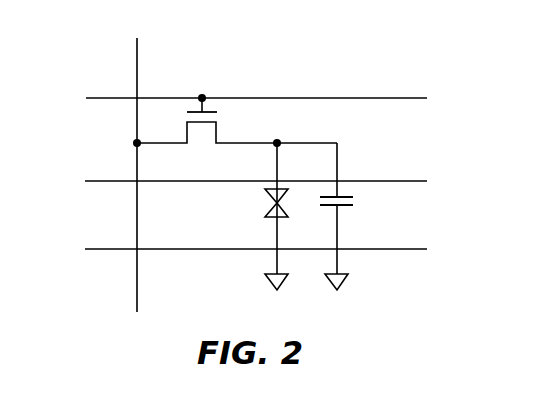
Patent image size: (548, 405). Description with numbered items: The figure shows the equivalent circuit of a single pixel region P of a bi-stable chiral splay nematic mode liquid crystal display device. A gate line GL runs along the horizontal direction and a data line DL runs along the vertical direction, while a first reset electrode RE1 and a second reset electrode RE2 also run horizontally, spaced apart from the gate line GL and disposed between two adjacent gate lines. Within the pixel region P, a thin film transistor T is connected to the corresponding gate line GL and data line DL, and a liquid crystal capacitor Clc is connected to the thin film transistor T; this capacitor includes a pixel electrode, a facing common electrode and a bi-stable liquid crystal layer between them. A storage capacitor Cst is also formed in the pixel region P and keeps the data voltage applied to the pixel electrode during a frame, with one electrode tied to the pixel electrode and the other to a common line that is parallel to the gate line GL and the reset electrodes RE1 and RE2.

The data line DL is at (150, 174).
The gate line GL is at (256, 87).
The first reset electrode RE1 is at (238, 182).
The second reset electrode RE2 is at (238, 251).
The thin film transistor T is at (235, 130).
The liquid crystal capacitor Clc is at (256, 216).
The storage capacitor Cst is at (359, 216).
The pixel region P is at (384, 122).